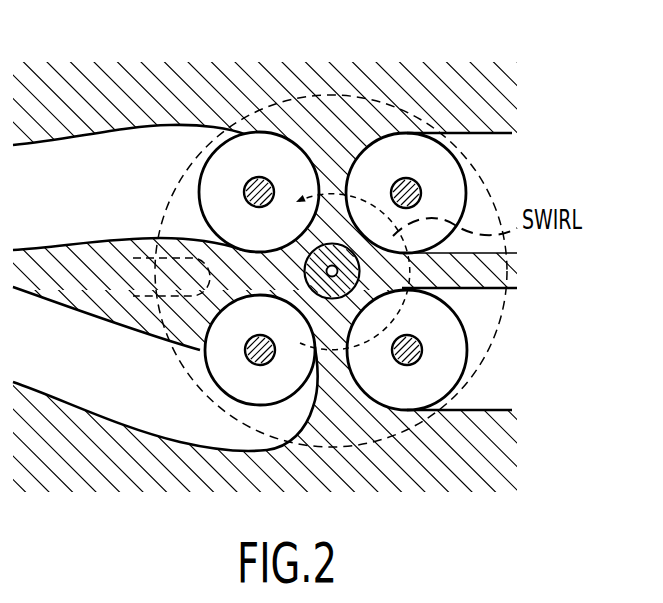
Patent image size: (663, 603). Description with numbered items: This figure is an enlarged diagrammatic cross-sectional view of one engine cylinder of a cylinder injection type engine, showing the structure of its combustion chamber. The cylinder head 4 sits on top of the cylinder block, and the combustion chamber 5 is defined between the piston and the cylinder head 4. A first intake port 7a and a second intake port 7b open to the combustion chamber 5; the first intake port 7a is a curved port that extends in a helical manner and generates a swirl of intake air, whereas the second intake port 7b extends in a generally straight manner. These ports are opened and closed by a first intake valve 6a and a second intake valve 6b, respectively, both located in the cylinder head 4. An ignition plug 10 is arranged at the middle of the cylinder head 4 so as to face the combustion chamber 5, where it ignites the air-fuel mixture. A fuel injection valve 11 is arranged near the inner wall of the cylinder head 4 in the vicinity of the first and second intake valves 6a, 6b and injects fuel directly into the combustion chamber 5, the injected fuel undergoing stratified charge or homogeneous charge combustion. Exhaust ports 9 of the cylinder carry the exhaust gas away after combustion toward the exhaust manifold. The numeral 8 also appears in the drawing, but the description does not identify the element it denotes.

The cylinder head 4 is at (457, 78).
The combustion chamber 5 is at (333, 95).
The first intake valve 6a is at (273, 397).
The second intake valve 6b is at (260, 143).
The first intake port 7a is at (157, 425).
The second intake port 7b is at (113, 147).
The right swirlers 8 is at (407, 147).
The exhaust port 9 is at (510, 139).
The ignition plug 10 is at (309, 255).
The fuel injection valve 11 is at (141, 276).